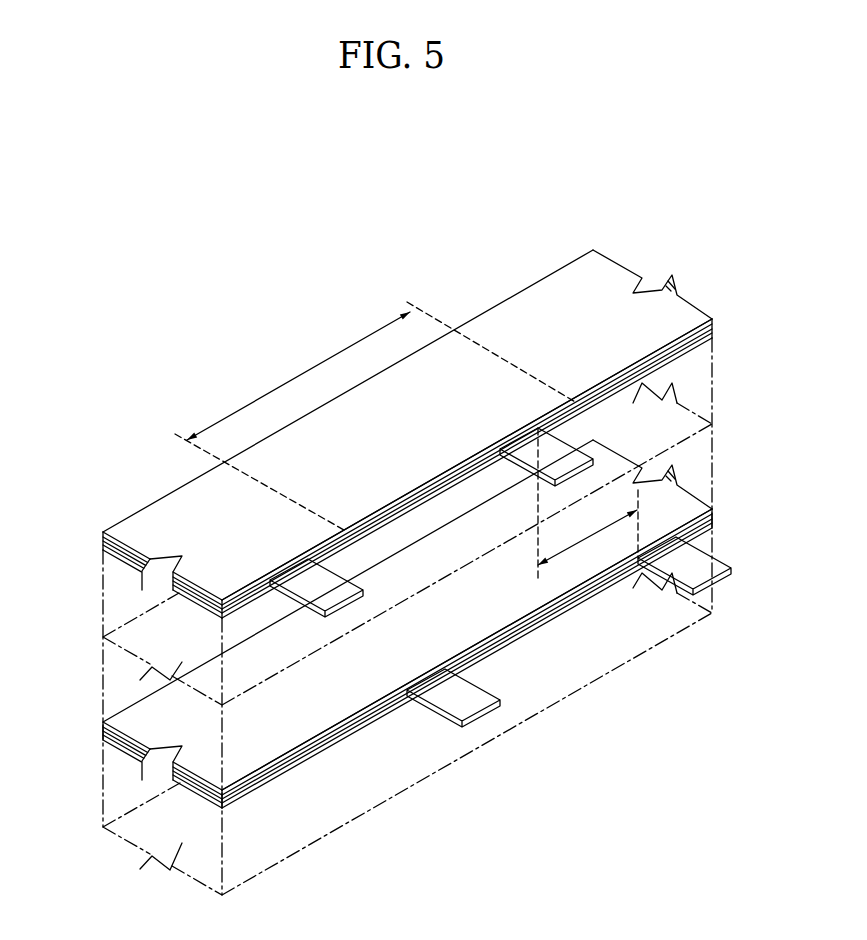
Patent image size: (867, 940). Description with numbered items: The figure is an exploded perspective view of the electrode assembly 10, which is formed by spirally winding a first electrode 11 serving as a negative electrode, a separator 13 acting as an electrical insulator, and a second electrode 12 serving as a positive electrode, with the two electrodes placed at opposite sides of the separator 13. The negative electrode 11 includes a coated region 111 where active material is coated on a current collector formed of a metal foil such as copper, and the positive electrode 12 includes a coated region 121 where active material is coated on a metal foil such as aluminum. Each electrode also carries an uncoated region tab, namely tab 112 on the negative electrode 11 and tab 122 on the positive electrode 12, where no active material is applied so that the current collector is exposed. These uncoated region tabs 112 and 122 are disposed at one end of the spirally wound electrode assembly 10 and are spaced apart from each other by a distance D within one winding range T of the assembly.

The electrode assembly 10 is at (337, 276).
The first electrode 11 is at (393, 661).
The second electrode 12 is at (383, 432).
The separator 13 is at (250, 690).
The coated region 111 is at (300, 718).
The uncoated region tab 112 is at (468, 703).
The coated region 121 is at (163, 518).
The uncoated region tab 122 is at (333, 583).